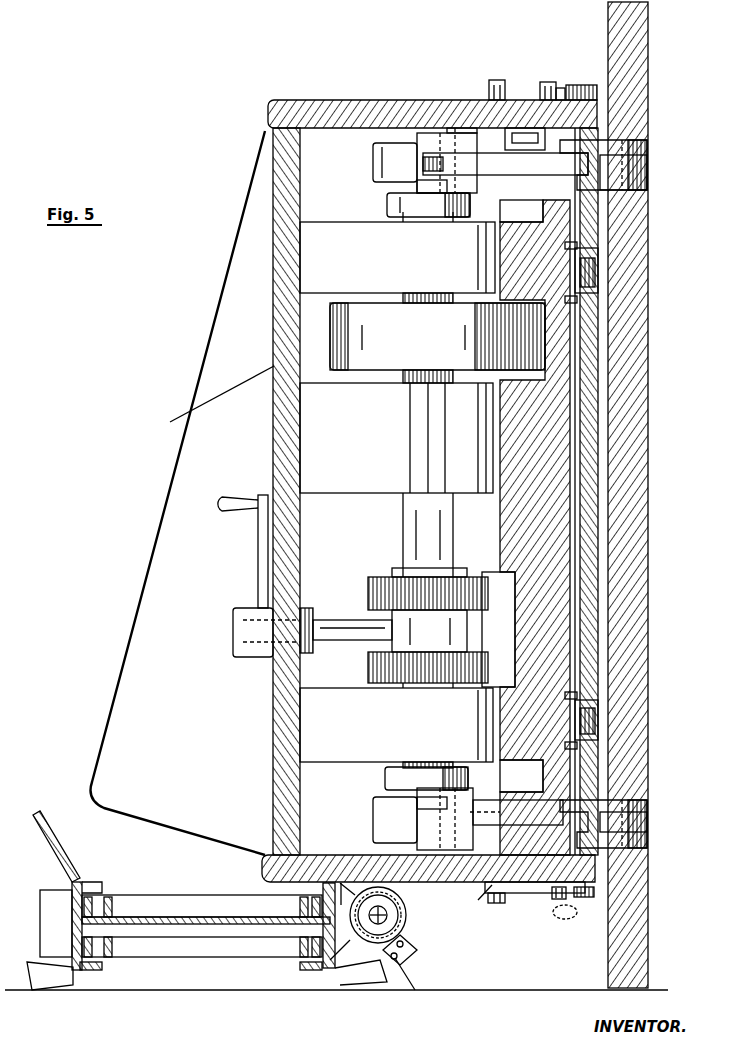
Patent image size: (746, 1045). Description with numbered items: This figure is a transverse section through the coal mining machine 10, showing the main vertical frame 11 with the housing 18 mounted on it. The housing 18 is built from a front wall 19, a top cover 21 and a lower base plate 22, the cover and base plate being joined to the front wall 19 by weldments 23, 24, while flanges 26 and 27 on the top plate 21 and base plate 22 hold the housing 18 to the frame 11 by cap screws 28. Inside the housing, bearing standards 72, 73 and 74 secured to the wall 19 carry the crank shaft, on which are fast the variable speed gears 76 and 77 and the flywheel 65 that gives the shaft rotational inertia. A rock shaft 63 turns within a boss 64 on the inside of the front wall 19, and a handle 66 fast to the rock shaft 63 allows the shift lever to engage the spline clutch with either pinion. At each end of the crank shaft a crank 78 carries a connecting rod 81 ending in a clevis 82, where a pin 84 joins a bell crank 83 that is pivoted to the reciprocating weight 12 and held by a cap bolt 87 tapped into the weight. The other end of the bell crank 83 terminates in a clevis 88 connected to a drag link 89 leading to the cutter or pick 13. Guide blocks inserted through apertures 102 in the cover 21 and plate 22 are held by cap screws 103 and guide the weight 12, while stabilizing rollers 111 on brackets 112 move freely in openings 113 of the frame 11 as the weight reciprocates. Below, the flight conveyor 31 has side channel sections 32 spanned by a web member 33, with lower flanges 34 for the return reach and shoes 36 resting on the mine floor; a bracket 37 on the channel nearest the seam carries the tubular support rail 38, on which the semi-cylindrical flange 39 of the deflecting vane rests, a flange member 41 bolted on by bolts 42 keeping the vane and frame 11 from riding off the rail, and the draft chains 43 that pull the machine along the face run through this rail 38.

The mining machine 10 is at (228, 258).
The main vertical frame 11 is at (590, 375).
The reciprocating weight 12 is at (524, 632).
The cutter or pick 13 is at (632, 400).
The housing 18 is at (236, 328).
The front wall 19 is at (212, 402).
The top cover 21 is at (310, 100).
The lower base plate 22 is at (484, 884).
The weldment 23 is at (268, 131).
The weldment 24 is at (270, 852).
The flange 26 is at (575, 88).
The flange 27 is at (575, 902).
The cap screws 28 is at (558, 88).
The double strand flight conveyor 31 is at (118, 878).
The side channel sections 32 is at (100, 890).
The web member 33 is at (160, 917).
The lower flanges 34 is at (95, 972).
The shoes 36 is at (258, 985).
The bracket 37 is at (333, 975).
The tubular support rail 38 is at (394, 922).
The semi-cylindrical flange 39 is at (395, 902).
The flange member 41 is at (412, 952).
The bolts 42 is at (393, 965).
The draft chains 43 is at (565, 918).
The rock shaft 63 is at (338, 620).
The boss 64 is at (308, 608).
The flywheel 65 is at (429, 344).
The handle 66 is at (258, 558).
The bearing standard 72 is at (398, 272).
The bearing standard 73 is at (366, 441).
The bearing standard 74 is at (398, 736).
The variable speed gear 76 is at (382, 577).
The variable speed gear 77 is at (368, 665).
The crank 78 is at (387, 200).
The connecting rod 81 is at (390, 143).
The clevis 82 is at (428, 133).
The bell crank 83 is at (512, 150).
The pin 84 is at (455, 118).
The cap bolt 87 is at (512, 160).
The clevis 88 is at (612, 143).
The drag link 89 is at (650, 165).
The apertures 102 is at (490, 900).
The cap screws 103 is at (497, 80).
The stabilizing rollers 111 is at (600, 272).
The brackets 112 is at (582, 246).
The openings 113 is at (596, 258).